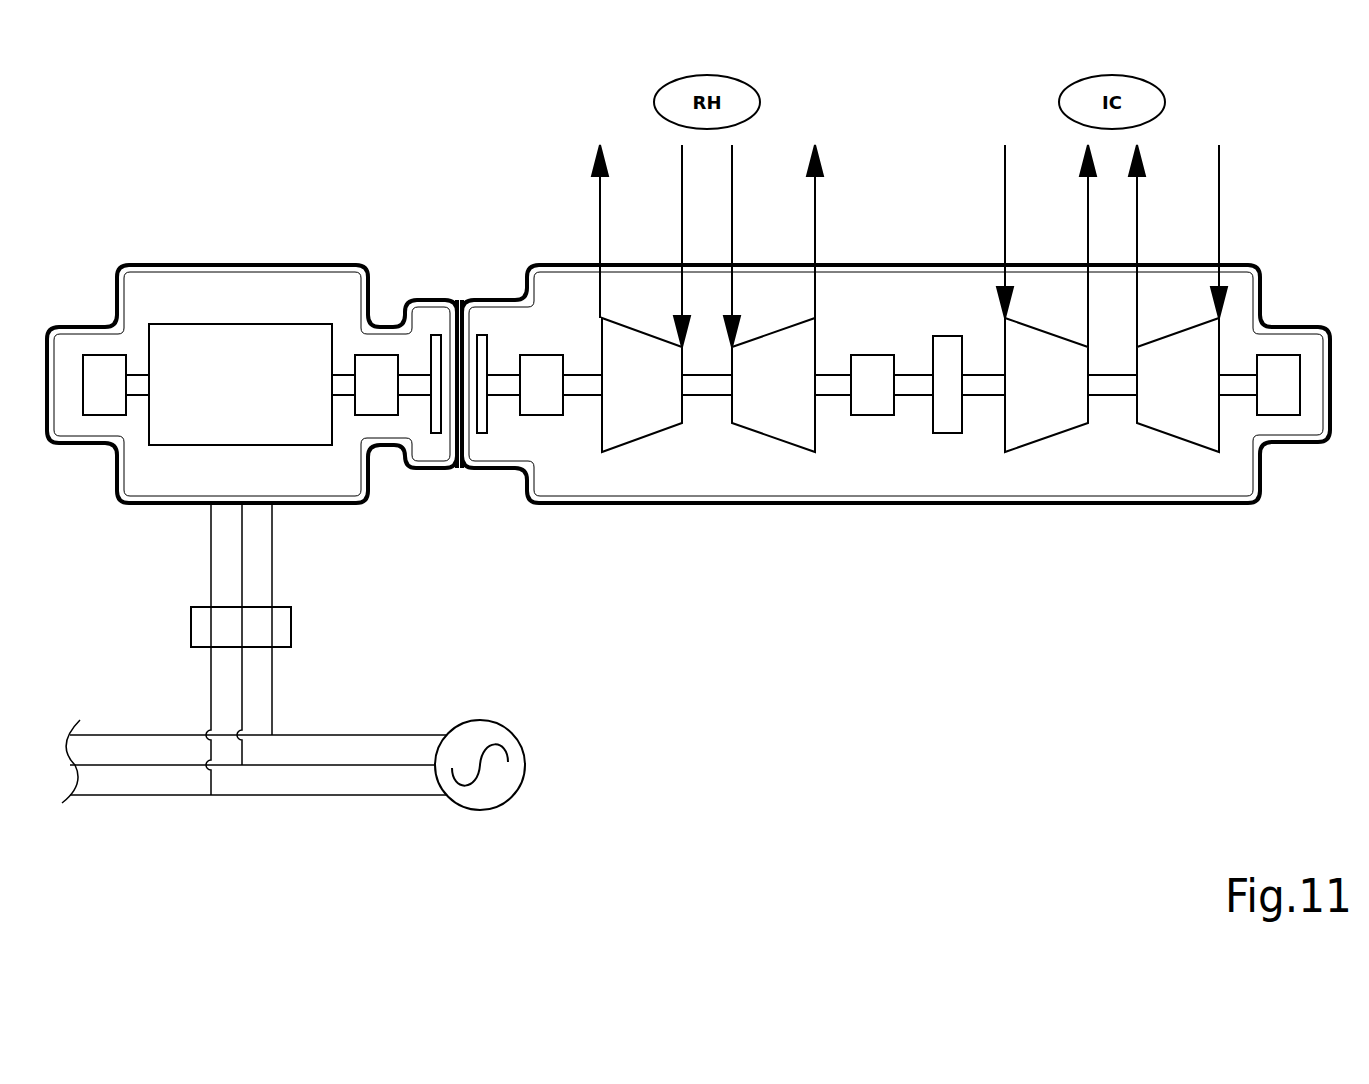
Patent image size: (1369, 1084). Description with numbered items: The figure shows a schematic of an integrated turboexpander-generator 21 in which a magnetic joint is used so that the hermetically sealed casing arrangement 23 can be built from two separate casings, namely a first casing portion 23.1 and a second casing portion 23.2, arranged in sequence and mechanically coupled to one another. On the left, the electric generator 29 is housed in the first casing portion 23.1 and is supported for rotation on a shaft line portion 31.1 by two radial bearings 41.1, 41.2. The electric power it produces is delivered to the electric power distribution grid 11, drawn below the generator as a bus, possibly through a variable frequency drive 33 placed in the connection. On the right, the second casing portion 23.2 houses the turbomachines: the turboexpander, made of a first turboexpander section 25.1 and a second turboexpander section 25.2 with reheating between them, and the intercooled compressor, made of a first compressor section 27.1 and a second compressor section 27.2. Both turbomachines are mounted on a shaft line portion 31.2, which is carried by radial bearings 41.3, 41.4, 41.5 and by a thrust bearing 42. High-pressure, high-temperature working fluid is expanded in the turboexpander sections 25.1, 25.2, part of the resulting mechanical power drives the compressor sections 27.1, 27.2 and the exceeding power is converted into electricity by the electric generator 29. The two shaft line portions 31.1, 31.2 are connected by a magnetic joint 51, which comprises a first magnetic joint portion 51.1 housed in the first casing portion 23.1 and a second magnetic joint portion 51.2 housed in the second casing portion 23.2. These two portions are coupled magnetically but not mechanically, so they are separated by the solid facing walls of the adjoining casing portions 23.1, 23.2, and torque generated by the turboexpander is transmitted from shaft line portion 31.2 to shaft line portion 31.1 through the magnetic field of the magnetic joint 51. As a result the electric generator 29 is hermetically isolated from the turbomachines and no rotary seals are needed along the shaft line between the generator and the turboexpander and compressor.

The electric power distribution grid 11 is at (350, 815).
The integrated turboexpander-generator 21 is at (1320, 272).
The hermetically sealed casing arrangement 23 is at (423, 282).
The first casing portion 23.1 is at (342, 508).
The second casing portion 23.2 is at (652, 500).
The first turboexpander section 25.1 is at (616, 389).
The second turboexpander section 25.2 is at (747, 389).
The first compressor section 27.1 is at (1020, 389).
The second compressor section 27.2 is at (1152, 389).
The electric generator 29 is at (237, 348).
The shaft line portion 31.1 is at (137, 378).
The shaft line portion 31.2 is at (580, 390).
The variable frequency drive 33 is at (291, 627).
The radial bearing 41.1 is at (97, 395).
The radial bearing 41.2 is at (362, 397).
The radial bearing 41.3 is at (540, 397).
The radial bearing 41.4 is at (877, 395).
The radial bearing 41.5 is at (1285, 397).
The thrust bearing 42 is at (950, 343).
The magnetic joint 51 is at (459, 500).
The first magnetic joint portion 51.1 is at (435, 425).
The second magnetic joint portion 51.2 is at (482, 345).